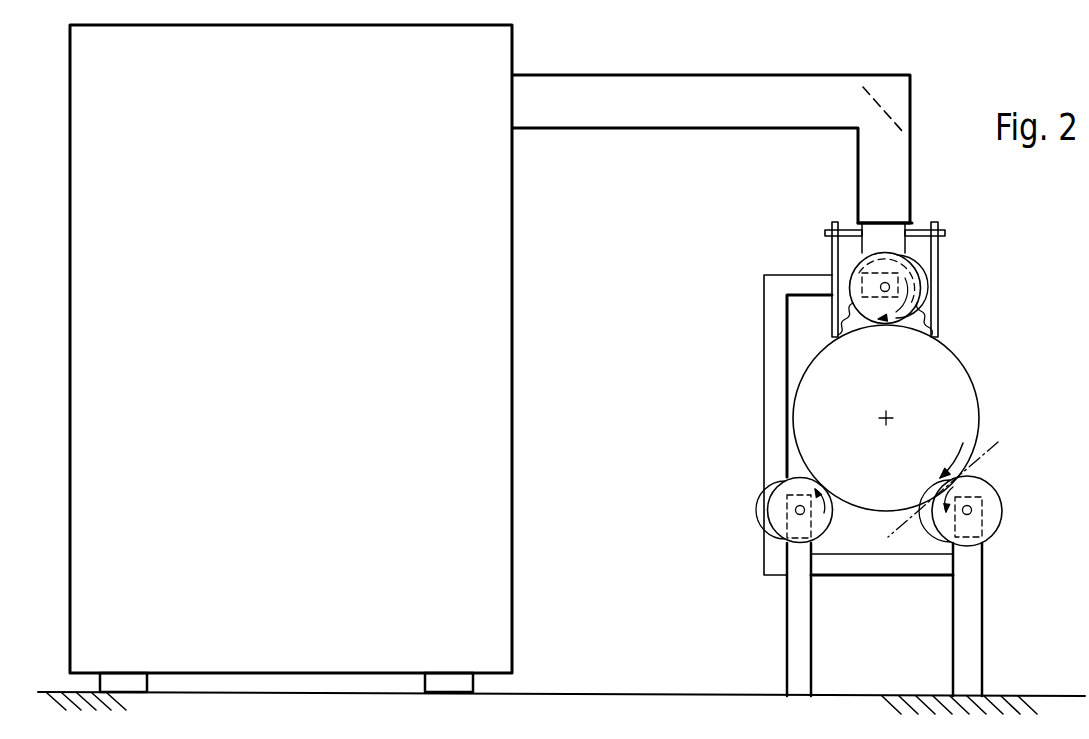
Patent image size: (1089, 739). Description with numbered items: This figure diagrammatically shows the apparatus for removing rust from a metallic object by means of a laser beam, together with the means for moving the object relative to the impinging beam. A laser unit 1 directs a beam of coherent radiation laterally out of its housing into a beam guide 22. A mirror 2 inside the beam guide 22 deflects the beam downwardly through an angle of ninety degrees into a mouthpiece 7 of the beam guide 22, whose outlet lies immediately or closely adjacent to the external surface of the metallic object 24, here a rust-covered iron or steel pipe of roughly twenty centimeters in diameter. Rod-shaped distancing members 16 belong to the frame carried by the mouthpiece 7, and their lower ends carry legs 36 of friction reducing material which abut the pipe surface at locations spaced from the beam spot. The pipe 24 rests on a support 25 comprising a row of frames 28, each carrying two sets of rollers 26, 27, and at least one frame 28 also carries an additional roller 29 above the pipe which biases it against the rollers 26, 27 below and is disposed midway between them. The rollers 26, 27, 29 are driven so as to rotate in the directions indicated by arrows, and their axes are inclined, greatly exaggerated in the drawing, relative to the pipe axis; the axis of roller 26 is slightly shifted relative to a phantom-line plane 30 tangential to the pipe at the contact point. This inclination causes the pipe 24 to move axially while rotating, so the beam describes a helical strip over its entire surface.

The laser unit 1 is at (284, 333).
The mirror 2 is at (908, 103).
The beam guide 22 is at (712, 115).
The mouthpiece 7 is at (898, 245).
The distancing members 16 is at (935, 272).
The legs 36 is at (935, 335).
The additional roller 29 is at (873, 263).
The metallic object 24 is at (962, 405).
The support 25 is at (1036, 492).
The rollers 26 is at (992, 517).
The rollers 27 is at (780, 522).
The frames 28 is at (797, 562).
The plane 30 is at (903, 525).